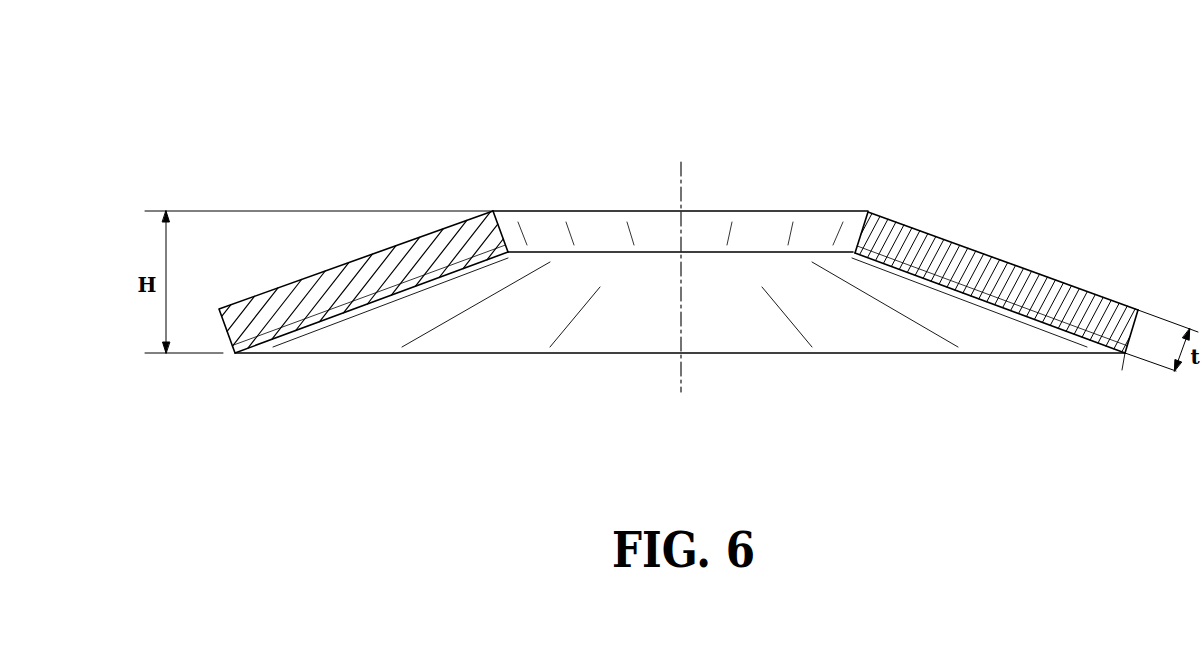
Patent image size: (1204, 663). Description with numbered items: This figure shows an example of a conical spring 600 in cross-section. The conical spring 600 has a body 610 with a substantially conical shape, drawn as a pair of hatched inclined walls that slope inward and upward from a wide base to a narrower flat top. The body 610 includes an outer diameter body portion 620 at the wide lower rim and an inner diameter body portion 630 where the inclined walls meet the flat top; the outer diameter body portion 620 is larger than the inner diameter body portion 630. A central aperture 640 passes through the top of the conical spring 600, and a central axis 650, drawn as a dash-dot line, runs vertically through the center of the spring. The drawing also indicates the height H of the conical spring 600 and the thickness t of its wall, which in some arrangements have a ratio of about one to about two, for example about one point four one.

The conical spring 600 is at (678, 221).
The body 610 is at (1025, 273).
The outer diameter body portion 620 is at (1128, 353).
The inner diameter body portion 630 is at (865, 212).
The central aperture 640 is at (725, 192).
The central axis 650 is at (675, 173).